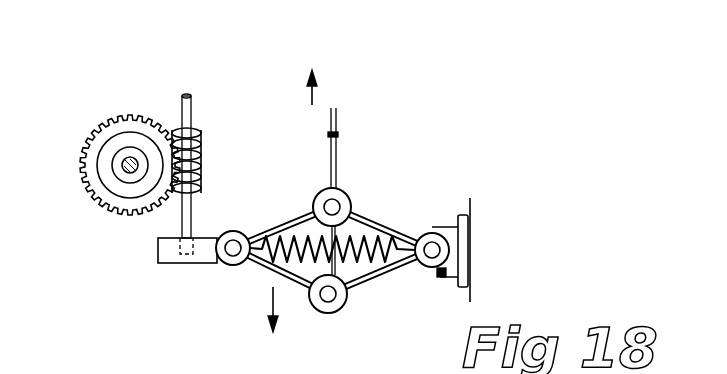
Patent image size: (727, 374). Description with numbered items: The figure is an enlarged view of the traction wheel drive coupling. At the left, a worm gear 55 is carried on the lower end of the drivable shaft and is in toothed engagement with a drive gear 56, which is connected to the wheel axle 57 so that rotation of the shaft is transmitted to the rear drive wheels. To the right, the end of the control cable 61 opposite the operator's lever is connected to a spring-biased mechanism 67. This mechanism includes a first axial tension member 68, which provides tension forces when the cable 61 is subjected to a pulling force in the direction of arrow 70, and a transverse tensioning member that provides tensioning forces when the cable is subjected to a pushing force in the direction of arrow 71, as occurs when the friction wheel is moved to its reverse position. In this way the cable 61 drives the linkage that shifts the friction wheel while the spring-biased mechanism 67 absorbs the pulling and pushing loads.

The worm gear 55 is at (197, 132).
The drive gear 56 is at (115, 118).
The wheel axle 57 is at (122, 164).
The cable 61 is at (338, 120).
The spring-biased mechanism 67 is at (405, 190).
The first axial tension member 68 is at (347, 192).
The arrow 70 is at (315, 68).
The arrow 71 is at (275, 325).